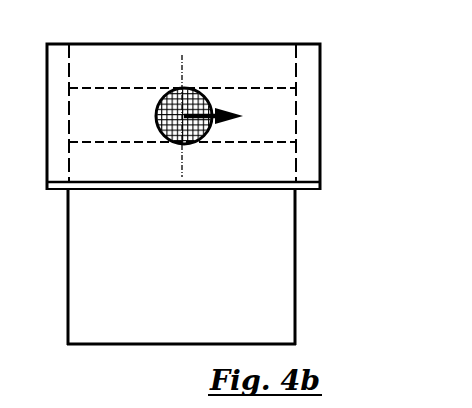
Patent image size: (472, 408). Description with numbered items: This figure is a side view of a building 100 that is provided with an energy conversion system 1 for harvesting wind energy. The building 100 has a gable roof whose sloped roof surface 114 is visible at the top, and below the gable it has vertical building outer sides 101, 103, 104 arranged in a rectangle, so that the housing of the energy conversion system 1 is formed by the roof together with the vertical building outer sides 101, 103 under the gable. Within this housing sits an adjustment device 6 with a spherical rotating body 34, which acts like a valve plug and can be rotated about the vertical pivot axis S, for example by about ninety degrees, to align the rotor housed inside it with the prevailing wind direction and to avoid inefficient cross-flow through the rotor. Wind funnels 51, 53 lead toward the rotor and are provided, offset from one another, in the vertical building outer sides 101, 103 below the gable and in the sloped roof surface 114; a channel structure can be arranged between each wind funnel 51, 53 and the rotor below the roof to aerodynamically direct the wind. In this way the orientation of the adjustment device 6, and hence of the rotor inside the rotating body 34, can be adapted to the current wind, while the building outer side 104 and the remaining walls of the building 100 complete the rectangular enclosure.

The energy conversion system 1 is at (230, 97).
The adjustment device 6 is at (162, 82).
The rotating body 34 is at (193, 82).
The wind funnel 51 is at (60, 110).
The wind funnel 53 is at (307, 113).
The sloped roof surface 114 is at (258, 80).
The building 100 is at (227, 277).
The vertical building outer side 101 is at (60, 253).
The vertical building outer side 103 is at (298, 227).
The vertical building outer side 104 is at (258, 304).